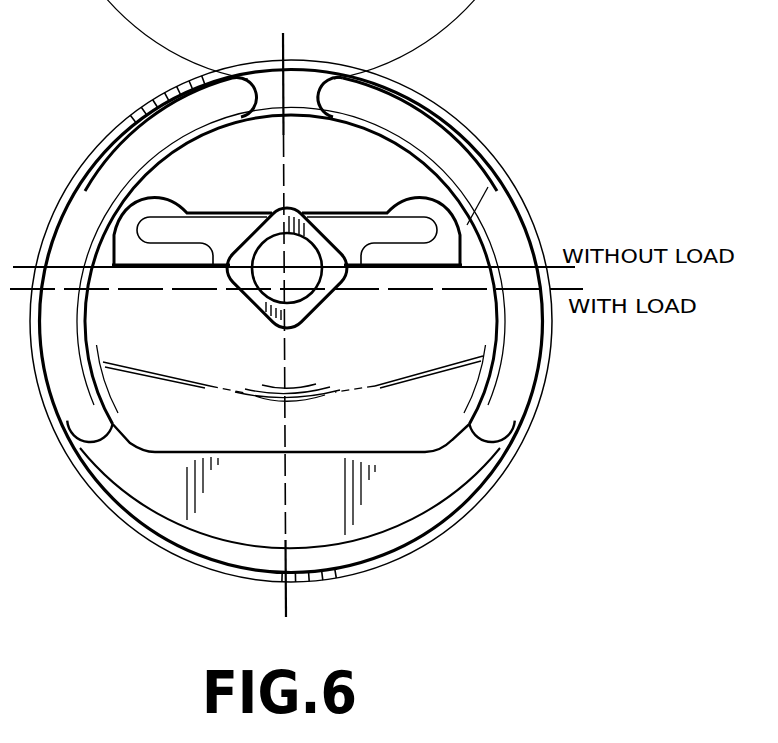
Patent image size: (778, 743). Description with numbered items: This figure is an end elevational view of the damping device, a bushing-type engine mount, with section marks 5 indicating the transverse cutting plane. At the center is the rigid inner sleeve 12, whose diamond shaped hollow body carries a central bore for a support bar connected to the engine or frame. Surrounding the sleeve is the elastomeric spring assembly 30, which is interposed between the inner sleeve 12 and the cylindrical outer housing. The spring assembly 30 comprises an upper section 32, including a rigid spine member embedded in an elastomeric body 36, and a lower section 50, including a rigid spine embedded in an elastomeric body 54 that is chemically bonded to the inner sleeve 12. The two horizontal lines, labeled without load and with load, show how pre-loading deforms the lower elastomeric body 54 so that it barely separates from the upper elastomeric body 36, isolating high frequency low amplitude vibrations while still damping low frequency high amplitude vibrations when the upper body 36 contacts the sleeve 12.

The section line 5- 5 is at (283, 33).
The inner sleeve 12 is at (310, 210).
The elastomeric spring assembly 30 is at (490, 184).
The upper section 32 is at (172, 174).
The elastomeric body 36 is at (297, 130).
The lower section 50 is at (426, 436).
The elastomeric body 54 is at (162, 417).